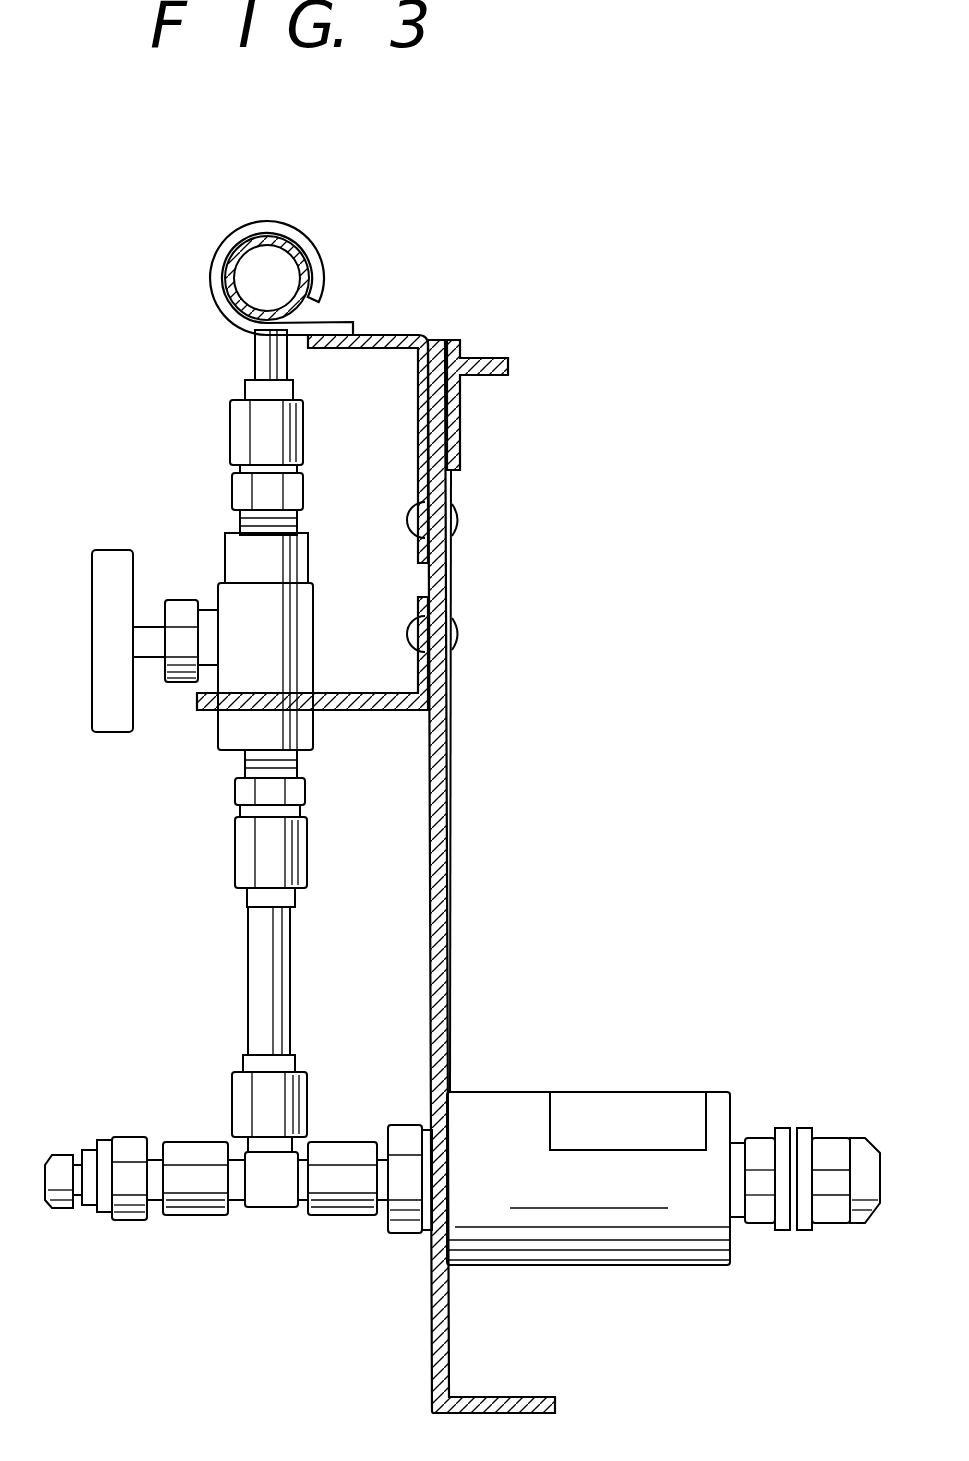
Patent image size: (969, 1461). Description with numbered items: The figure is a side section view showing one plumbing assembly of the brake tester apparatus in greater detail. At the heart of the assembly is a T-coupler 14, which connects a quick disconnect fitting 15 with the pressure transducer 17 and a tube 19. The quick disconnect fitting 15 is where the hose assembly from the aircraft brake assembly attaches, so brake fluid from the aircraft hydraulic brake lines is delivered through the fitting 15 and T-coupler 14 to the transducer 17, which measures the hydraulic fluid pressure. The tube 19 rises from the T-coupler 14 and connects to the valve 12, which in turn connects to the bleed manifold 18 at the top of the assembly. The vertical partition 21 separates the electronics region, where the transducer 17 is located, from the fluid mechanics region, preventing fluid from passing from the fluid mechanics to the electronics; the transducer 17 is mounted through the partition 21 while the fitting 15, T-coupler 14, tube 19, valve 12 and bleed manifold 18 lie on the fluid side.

The valve 12 is at (105, 628).
The T-coupler 14 is at (280, 1197).
The quick disconnect fitting 15 is at (131, 1221).
The pressure transducer 17 is at (618, 1265).
The bleed manifold 18 is at (300, 300).
The tube 19 is at (260, 965).
The partition 21 is at (452, 350).